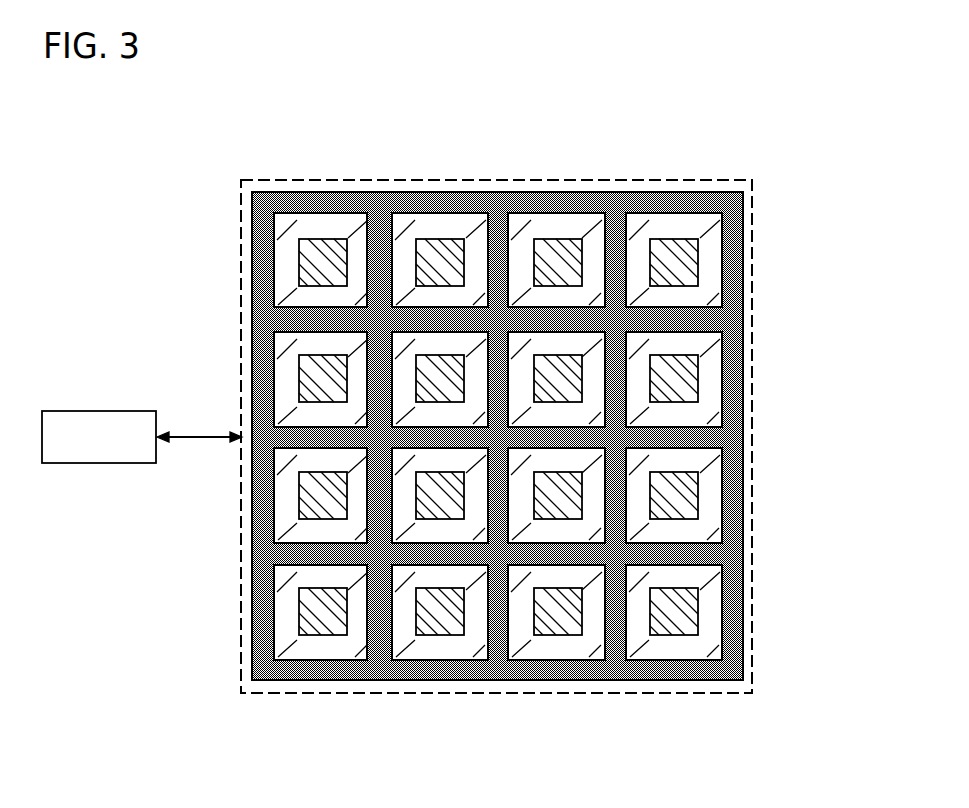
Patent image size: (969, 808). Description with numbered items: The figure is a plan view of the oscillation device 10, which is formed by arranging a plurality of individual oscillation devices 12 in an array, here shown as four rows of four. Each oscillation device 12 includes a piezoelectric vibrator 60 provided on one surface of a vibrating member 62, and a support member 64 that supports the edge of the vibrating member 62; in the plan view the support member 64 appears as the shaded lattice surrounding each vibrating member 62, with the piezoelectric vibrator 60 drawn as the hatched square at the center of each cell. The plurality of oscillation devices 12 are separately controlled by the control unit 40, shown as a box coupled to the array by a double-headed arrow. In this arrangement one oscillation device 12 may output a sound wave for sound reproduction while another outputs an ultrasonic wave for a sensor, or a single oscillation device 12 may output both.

The oscillation device 10 is at (638, 178).
The oscillation device 12 is at (842, 217).
The control unit 40 is at (120, 411).
The piezoelectric vibrator 60 is at (683, 263).
The vibrating member 62 is at (705, 224).
The support member 64 is at (547, 192).